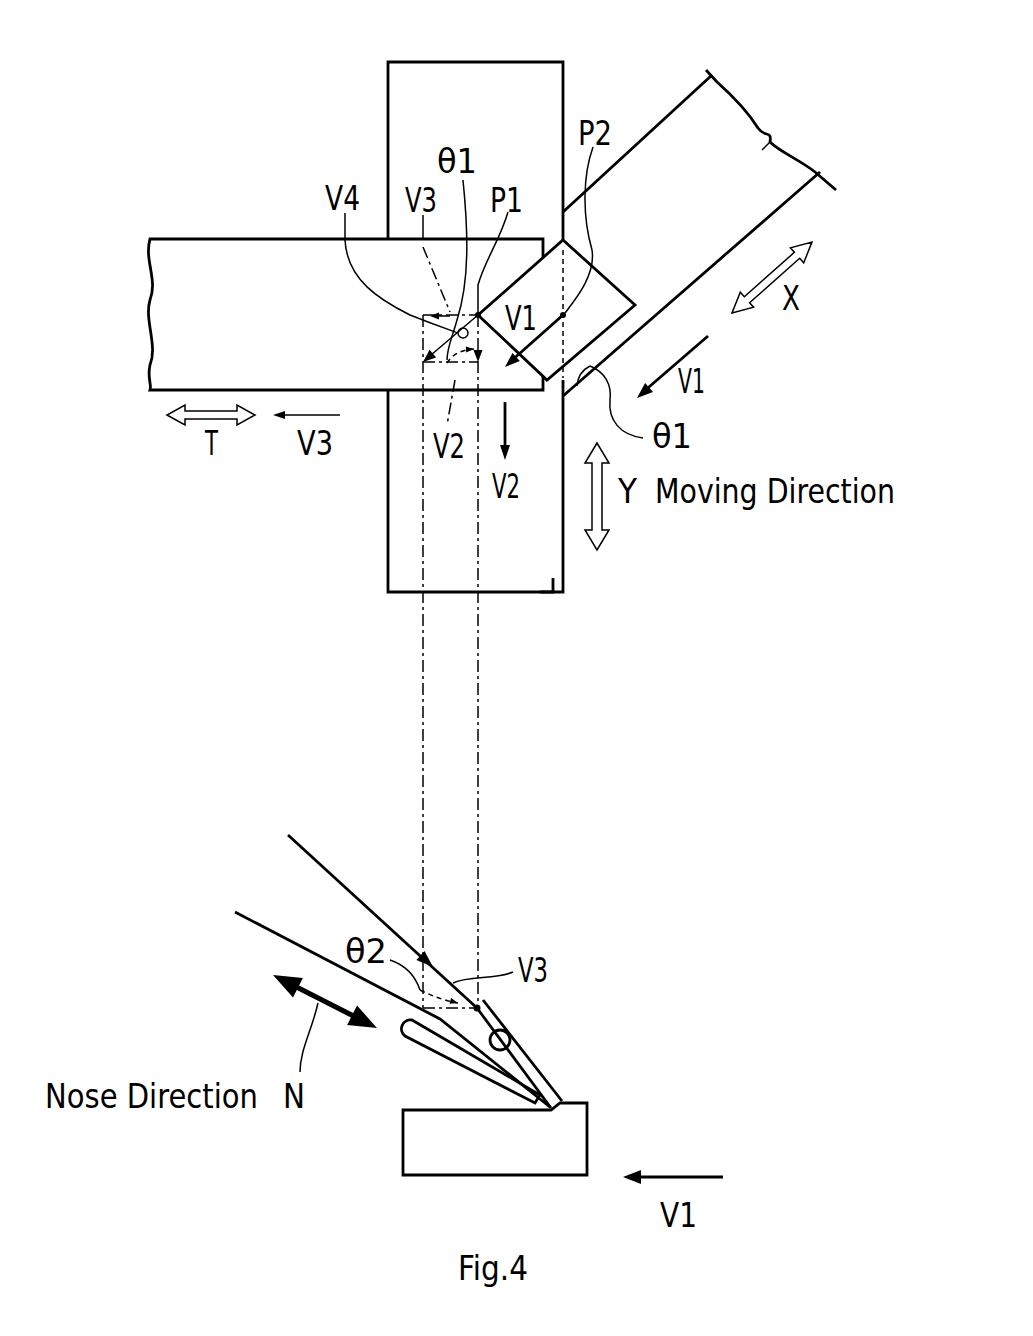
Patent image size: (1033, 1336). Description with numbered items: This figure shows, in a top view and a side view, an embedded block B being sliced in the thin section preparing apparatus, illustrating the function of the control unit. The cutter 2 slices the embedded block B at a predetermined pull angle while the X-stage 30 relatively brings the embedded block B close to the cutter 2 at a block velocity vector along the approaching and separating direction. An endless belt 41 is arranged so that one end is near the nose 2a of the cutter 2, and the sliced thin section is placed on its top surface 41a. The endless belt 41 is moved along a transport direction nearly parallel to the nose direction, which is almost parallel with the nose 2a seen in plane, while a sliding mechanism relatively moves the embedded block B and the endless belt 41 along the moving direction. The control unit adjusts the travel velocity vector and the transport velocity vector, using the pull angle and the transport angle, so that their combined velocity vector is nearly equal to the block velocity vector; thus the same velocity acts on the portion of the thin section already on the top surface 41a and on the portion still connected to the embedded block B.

The cutter 2 is at (493, 78).
The nose 2a is at (565, 597).
The X-stage 30 is at (773, 131).
The endless belt 41 is at (190, 252).
The top surface 41a is at (323, 863).
The embedded block B is at (600, 283).